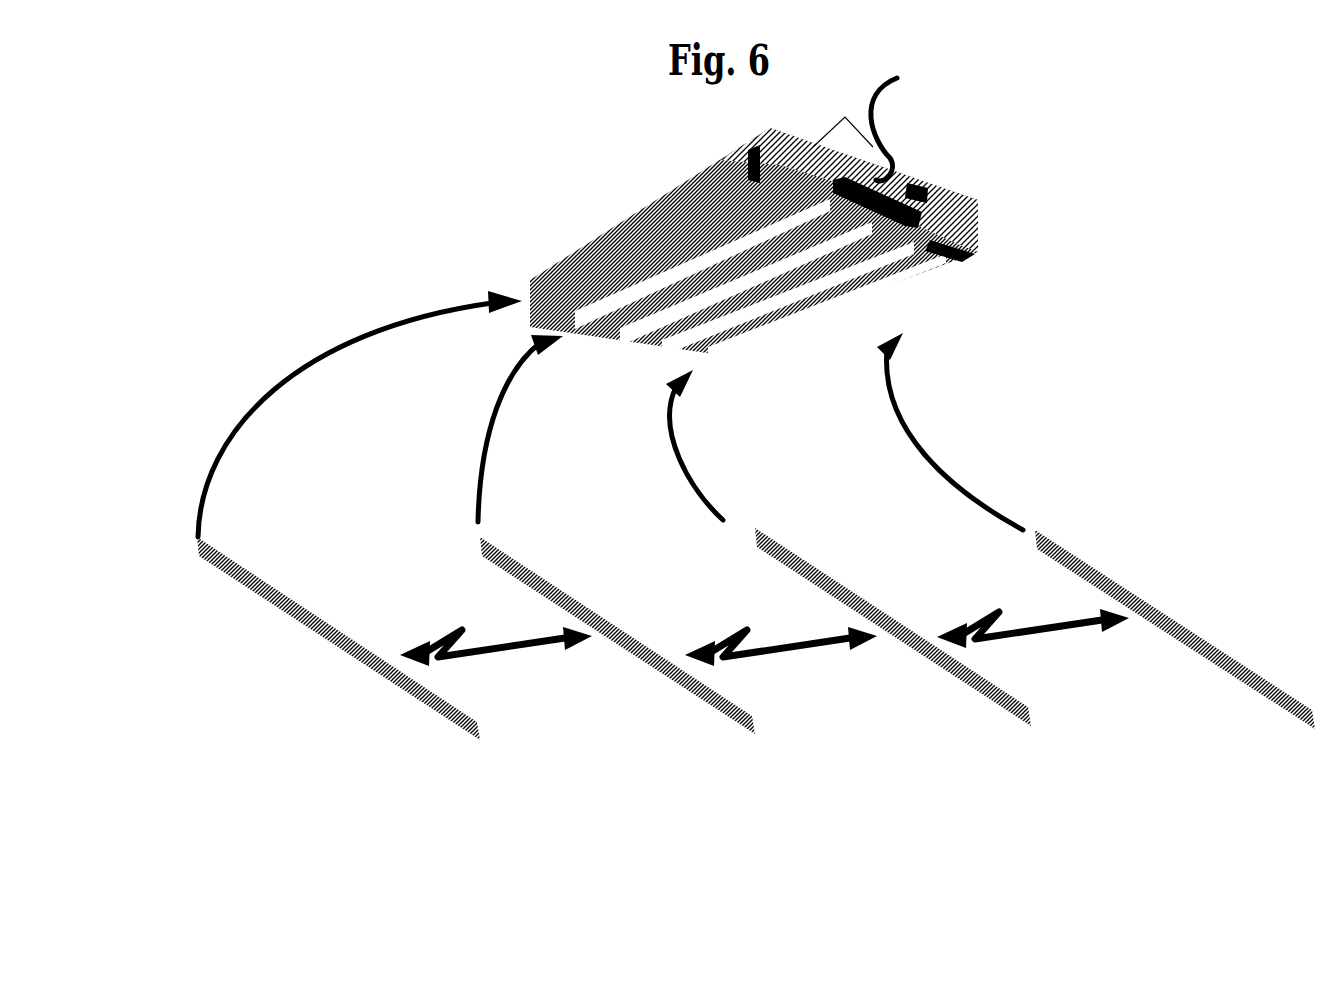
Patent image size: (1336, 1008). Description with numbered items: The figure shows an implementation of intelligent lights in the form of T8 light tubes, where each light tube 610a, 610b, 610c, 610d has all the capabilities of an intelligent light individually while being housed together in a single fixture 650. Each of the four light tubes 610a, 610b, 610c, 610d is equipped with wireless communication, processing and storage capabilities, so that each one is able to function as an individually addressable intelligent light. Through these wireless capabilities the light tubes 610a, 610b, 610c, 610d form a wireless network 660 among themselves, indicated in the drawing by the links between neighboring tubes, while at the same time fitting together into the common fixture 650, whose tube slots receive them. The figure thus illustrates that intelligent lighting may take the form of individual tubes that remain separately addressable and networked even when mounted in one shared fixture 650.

The light tube 610a is at (312, 515).
The light tube 610b is at (569, 534).
The light tube 610c is at (841, 548).
The light tube 610d is at (1096, 531).
The fixture 650 is at (754, 218).
The wireless network 660 is at (1045, 638).